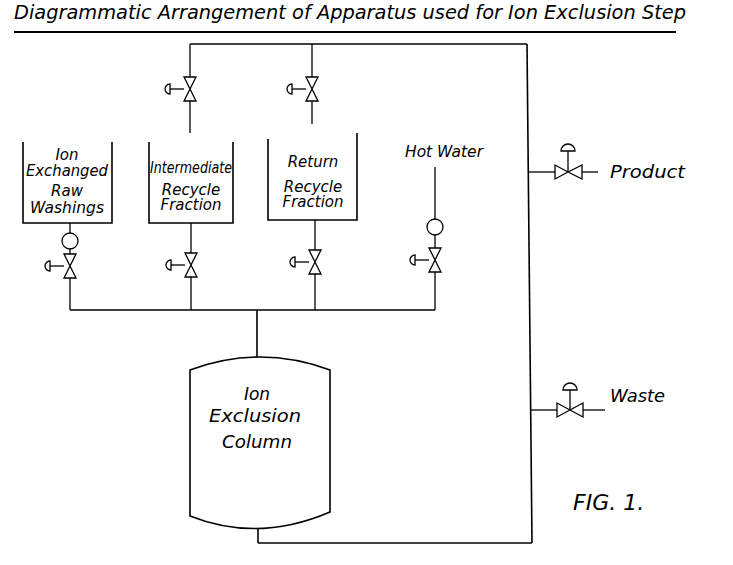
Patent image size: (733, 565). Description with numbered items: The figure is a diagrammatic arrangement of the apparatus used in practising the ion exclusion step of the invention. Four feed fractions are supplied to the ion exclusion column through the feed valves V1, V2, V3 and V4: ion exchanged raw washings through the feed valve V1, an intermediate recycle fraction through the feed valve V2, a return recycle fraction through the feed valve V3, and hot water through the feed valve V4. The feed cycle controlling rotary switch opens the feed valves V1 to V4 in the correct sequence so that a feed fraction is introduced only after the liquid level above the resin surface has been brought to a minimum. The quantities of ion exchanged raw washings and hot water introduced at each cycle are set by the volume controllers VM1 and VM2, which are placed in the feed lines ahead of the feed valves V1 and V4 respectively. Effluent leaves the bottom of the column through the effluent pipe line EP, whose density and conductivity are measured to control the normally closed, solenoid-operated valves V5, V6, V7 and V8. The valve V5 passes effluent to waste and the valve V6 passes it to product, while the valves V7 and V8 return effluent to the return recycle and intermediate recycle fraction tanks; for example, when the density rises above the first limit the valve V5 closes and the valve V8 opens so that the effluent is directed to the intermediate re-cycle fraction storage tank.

The feed valve V1 is at (72, 282).
The feed valve V2 is at (194, 266).
The feed valve V3 is at (318, 265).
The feed valve V4 is at (438, 279).
The valve V5 is at (568, 412).
The valve V6 is at (563, 175).
The valve V7 is at (317, 84).
The valve V8 is at (193, 88).
The volume controller VM1 is at (52, 238).
The volume controller VM2 is at (453, 207).
The effluent pipe line EP is at (412, 547).